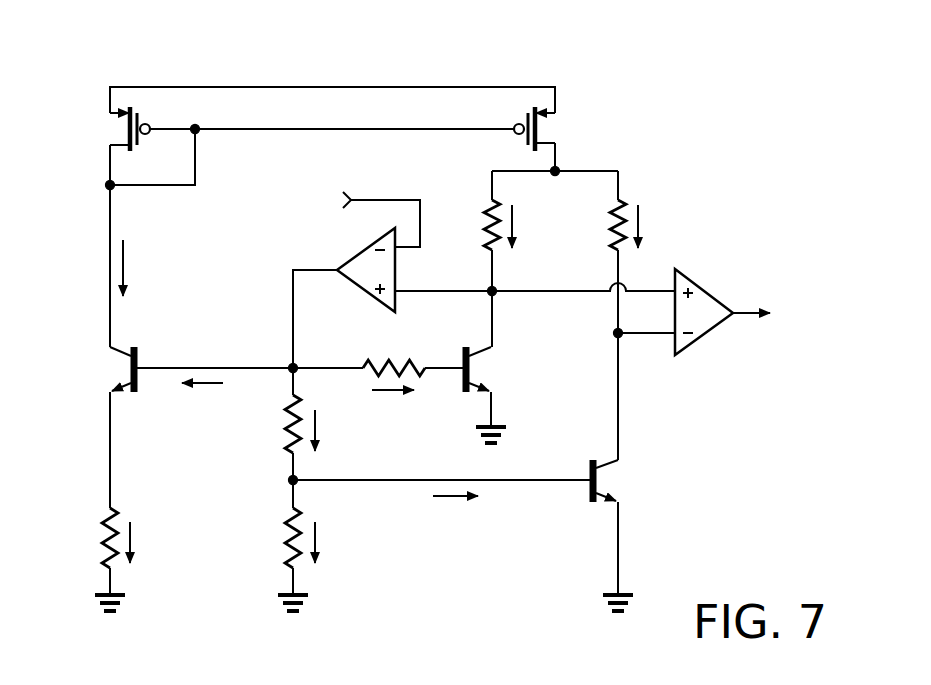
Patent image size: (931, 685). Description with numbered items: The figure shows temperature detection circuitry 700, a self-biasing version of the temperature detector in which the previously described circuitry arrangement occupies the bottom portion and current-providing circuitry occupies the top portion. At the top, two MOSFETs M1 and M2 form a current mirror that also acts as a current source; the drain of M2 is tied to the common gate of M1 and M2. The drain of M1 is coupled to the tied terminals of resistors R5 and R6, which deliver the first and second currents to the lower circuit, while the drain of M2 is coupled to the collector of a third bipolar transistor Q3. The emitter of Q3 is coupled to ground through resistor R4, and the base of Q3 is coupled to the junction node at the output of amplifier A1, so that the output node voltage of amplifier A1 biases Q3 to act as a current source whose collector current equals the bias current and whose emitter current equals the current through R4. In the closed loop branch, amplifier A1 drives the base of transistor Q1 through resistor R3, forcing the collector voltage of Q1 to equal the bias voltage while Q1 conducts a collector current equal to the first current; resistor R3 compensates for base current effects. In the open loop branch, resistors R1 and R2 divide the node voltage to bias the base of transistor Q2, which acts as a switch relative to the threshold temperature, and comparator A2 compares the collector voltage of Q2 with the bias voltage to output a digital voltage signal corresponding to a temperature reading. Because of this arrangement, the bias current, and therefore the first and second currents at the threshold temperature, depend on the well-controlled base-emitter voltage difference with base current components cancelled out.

The temperature detection circuitry 700 is at (712, 84).
The MOSFET M1 is at (550, 129).
The MOSFET M2 is at (113, 129).
The resistor R1 is at (278, 424).
The resistor R2 is at (278, 538).
The resistor R3 is at (394, 354).
The resistor R4 is at (94, 538).
The resistor R5 is at (477, 225).
The resistor R6 is at (603, 225).
The bipolar junction transistor Q1 is at (495, 369).
The bipolar junction transistor Q2 is at (621, 481).
The third bipolar junction transistor Q3 is at (106, 369).
The amplifier A1 is at (363, 270).
The comparator A2 is at (704, 314).